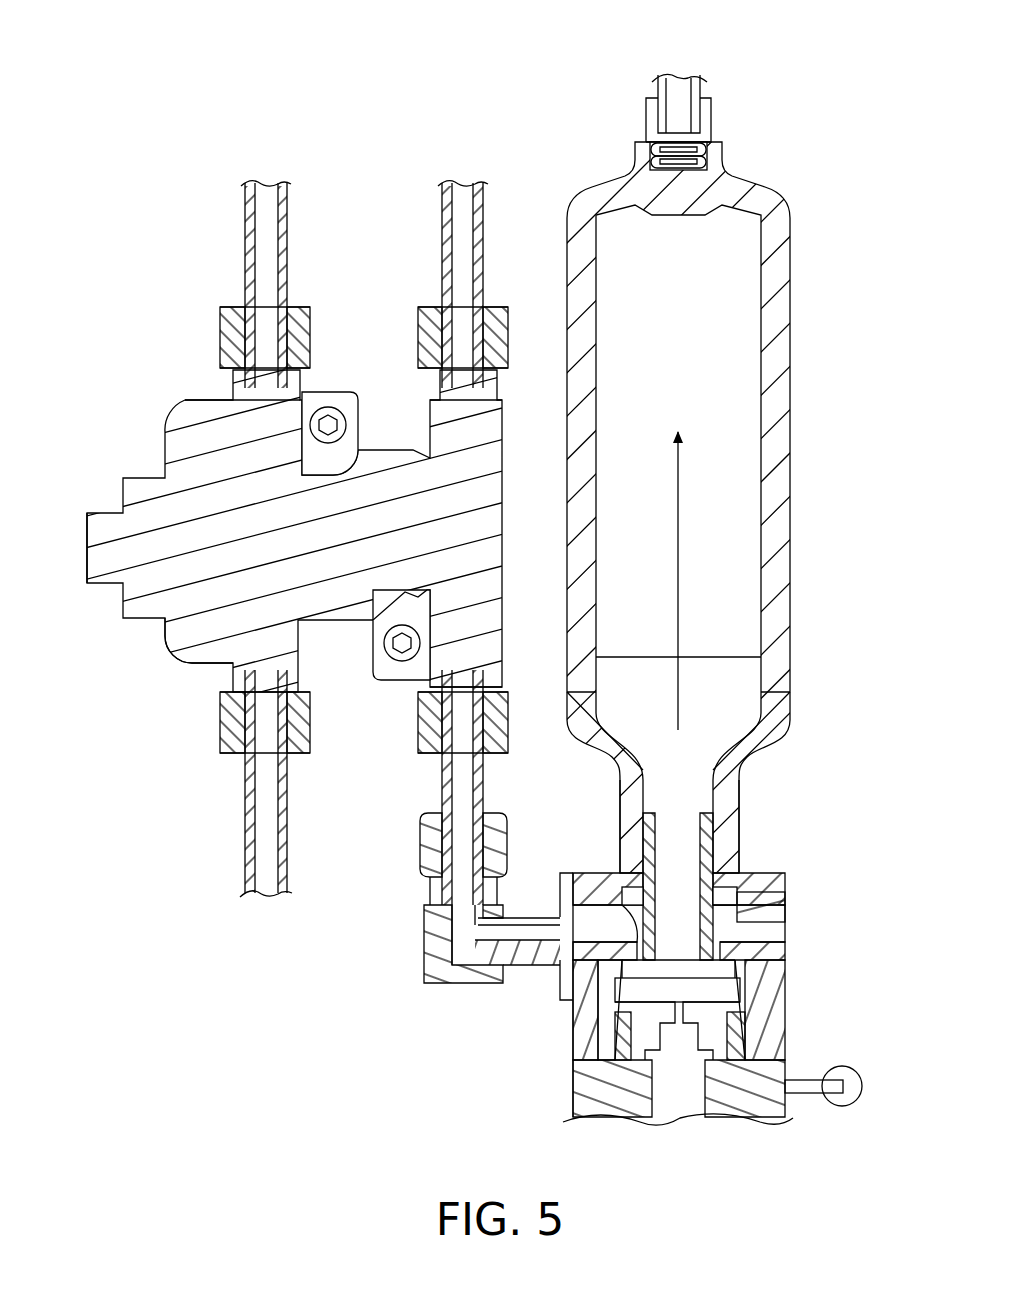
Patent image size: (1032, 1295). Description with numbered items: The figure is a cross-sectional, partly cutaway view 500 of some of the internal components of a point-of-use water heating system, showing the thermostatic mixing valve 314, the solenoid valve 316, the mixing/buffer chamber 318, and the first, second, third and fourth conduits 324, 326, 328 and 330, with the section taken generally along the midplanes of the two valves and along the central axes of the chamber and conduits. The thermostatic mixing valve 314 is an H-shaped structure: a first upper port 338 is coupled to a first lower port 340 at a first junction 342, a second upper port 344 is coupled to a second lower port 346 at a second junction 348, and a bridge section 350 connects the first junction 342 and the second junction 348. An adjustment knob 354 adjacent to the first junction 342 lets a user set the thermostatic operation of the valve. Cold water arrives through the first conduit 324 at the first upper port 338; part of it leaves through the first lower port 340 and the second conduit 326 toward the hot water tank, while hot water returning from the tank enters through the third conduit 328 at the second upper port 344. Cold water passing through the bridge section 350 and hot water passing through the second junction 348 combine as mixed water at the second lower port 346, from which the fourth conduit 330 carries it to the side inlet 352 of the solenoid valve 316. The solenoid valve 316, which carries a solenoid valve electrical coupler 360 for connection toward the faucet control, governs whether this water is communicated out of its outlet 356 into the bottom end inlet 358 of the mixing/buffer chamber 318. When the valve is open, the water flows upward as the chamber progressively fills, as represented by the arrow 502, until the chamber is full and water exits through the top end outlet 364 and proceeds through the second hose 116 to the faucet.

The cross-sectional, partly cutaway view 500 is at (782, 44).
The top end outlet 364 is at (632, 97).
The second hose 116 is at (727, 90).
The first conduit 324 is at (248, 232).
The third conduit 328 is at (433, 210).
The first upper port 338 is at (320, 300).
The second upper port 344 is at (514, 297).
The bridge section 350 is at (383, 440).
The mixing/buffer chamber 318 is at (803, 345).
The adjustment knob 354 is at (78, 530).
The arrow 502 is at (708, 465).
The second junction 348 is at (520, 540).
The first junction 342 is at (176, 672).
The thermostatic mixing valve 314 is at (360, 626).
The first lower port 340 is at (205, 760).
The second lower port 346 is at (408, 757).
The second conduit 326 is at (287, 842).
The outlet 356 is at (645, 835).
The bottom end inlet 358 is at (750, 815).
The solenoid valve 316 is at (802, 893).
The fourth conduit 330 is at (403, 925).
The solenoid valve electrical coupler 360 is at (856, 1063).
The side inlet 352 is at (543, 990).